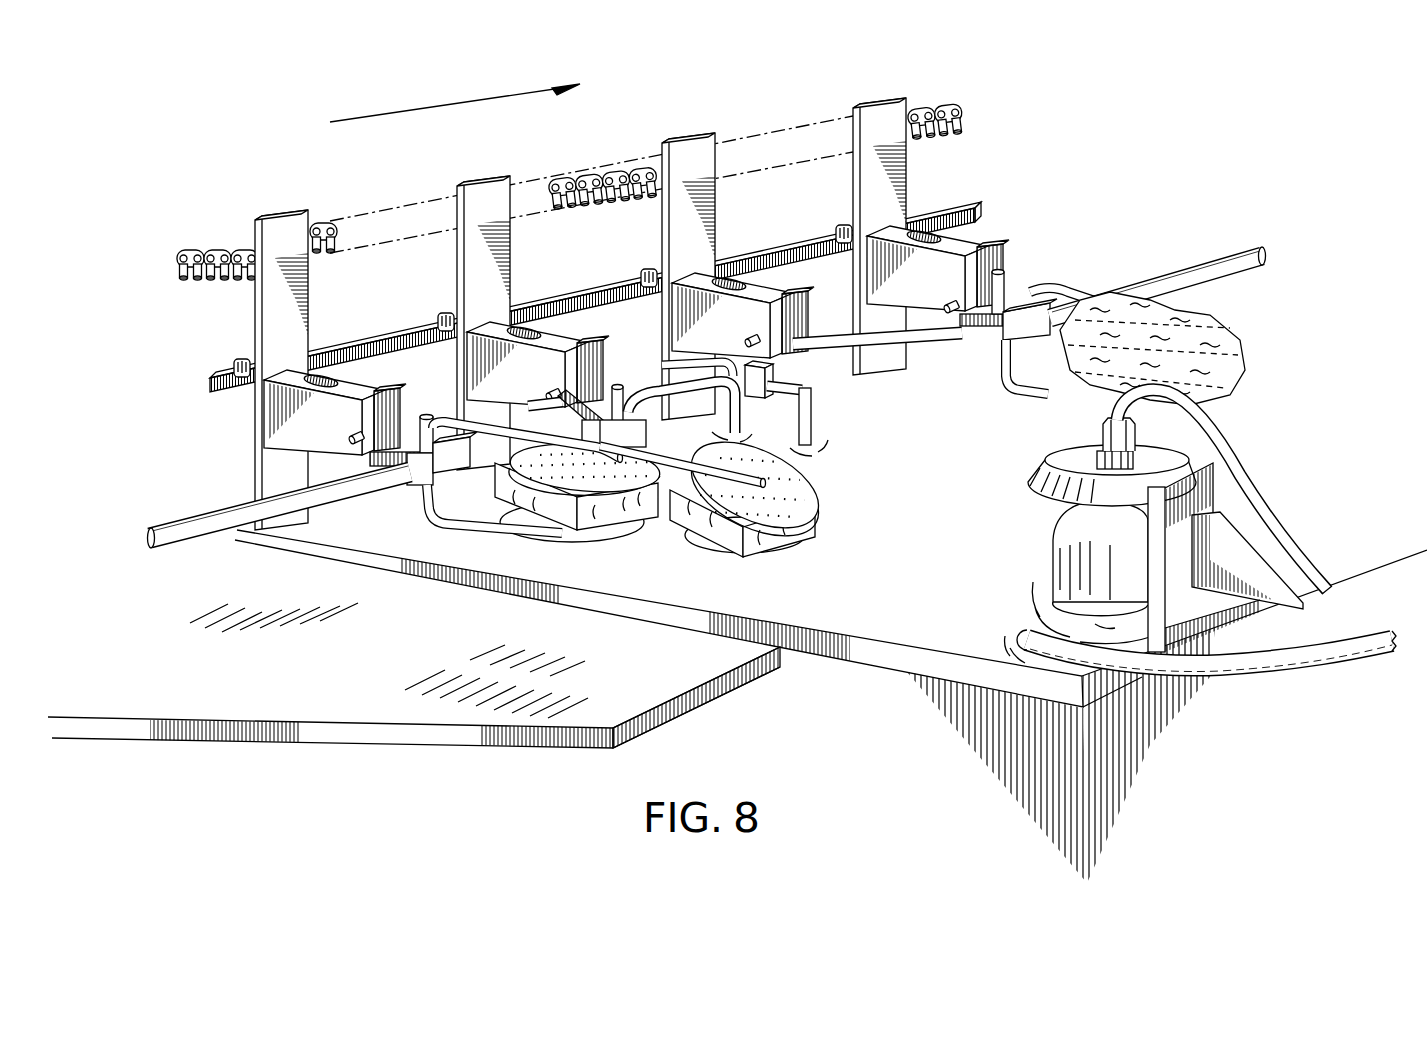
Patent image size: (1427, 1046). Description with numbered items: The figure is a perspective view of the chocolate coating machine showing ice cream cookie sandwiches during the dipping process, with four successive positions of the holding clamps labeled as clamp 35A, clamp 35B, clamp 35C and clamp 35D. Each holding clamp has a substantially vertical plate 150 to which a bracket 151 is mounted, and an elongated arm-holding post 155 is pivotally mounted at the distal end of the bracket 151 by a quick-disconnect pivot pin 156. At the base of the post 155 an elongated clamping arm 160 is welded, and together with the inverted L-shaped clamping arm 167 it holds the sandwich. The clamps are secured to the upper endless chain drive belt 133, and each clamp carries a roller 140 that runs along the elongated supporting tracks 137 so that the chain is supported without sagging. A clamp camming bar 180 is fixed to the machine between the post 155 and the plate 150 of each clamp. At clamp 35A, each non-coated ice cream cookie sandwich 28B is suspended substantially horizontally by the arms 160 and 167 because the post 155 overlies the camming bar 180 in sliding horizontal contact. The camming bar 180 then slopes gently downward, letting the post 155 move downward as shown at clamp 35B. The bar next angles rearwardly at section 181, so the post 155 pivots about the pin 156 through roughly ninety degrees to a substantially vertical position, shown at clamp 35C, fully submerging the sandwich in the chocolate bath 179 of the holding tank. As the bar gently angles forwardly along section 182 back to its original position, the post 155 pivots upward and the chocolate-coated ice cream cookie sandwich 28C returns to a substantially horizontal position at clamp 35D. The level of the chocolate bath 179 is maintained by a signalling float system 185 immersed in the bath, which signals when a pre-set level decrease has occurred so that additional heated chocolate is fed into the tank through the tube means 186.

The non-coated ice cream cookie sandwich 28B is at (636, 518).
The chocolate-coated ice cream cookie sandwich 28C is at (1212, 330).
The holding clamp 35A is at (312, 291).
The holding clamp 35B is at (512, 256).
The holding clamp 35C is at (718, 222).
The holding clamp 35D is at (903, 186).
The upper endless chain drive belt 133 is at (594, 178).
The supporting tracks 137 is at (324, 367).
The roller 140 is at (240, 372).
The plate 150 is at (297, 212).
The bracket 151 is at (523, 321).
The arm-holding post 155 is at (405, 437).
The pivot pin 156 is at (347, 437).
The clamping arm 160 is at (625, 455).
The inverted L-shaped clamping arm 167 is at (455, 520).
The chocolate bath 179 is at (925, 554).
The clamp camming bar 180 is at (207, 512).
The camming bar section 181 is at (693, 362).
The camming bar section 182 is at (838, 334).
The signalling float system 185 is at (1122, 548).
The tube means 186 is at (1298, 647).